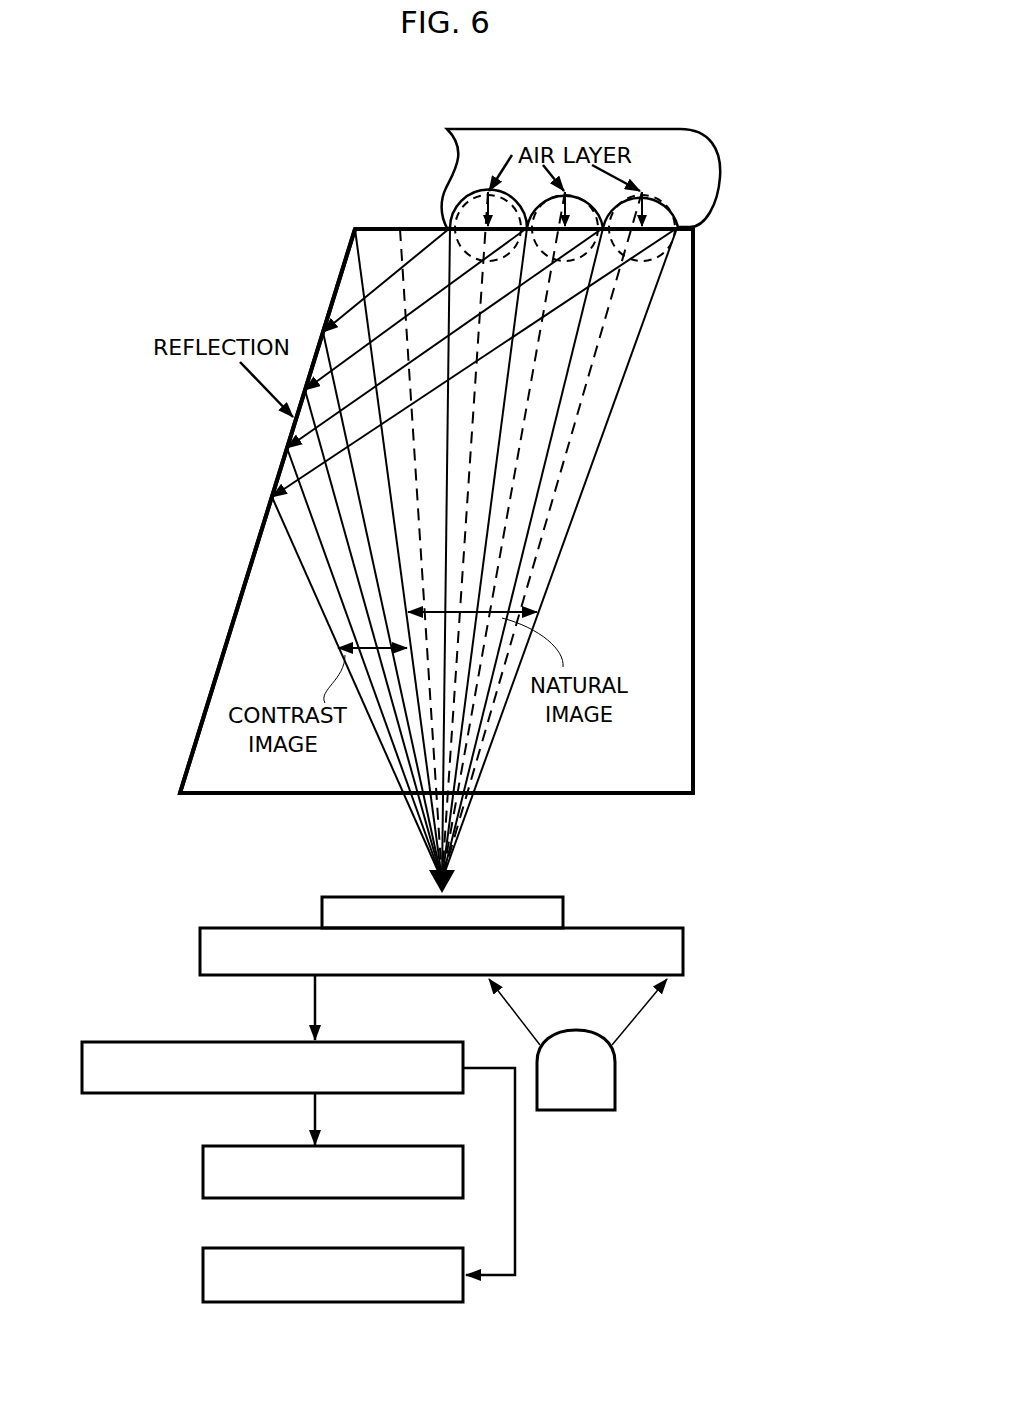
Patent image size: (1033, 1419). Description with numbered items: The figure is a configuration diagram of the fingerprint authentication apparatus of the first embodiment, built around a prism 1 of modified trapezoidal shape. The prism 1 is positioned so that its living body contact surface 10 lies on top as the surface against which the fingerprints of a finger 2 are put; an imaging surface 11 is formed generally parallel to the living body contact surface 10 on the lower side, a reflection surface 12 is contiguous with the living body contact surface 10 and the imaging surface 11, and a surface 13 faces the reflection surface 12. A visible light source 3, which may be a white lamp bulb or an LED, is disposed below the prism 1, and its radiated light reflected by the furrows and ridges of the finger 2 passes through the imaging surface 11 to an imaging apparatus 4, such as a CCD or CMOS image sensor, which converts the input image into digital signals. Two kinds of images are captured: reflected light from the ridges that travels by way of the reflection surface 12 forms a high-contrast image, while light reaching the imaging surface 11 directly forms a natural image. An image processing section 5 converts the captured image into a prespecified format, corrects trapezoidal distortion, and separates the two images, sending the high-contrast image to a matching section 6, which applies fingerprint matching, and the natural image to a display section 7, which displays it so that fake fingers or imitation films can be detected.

The prism 1 is at (828, 398).
The finger 2 is at (527, 125).
The visible light source 3 is at (644, 1061).
The imaging apparatus 4 is at (441, 936).
The image processing section 5 is at (272, 1067).
The matching section 6 is at (333, 1172).
The display section 7 is at (333, 1275).
The living body contact surface 10 is at (380, 226).
The imaging surface 11 is at (585, 794).
The reflection surface 12 is at (245, 578).
The surface facing the reflection surface 13 is at (698, 558).